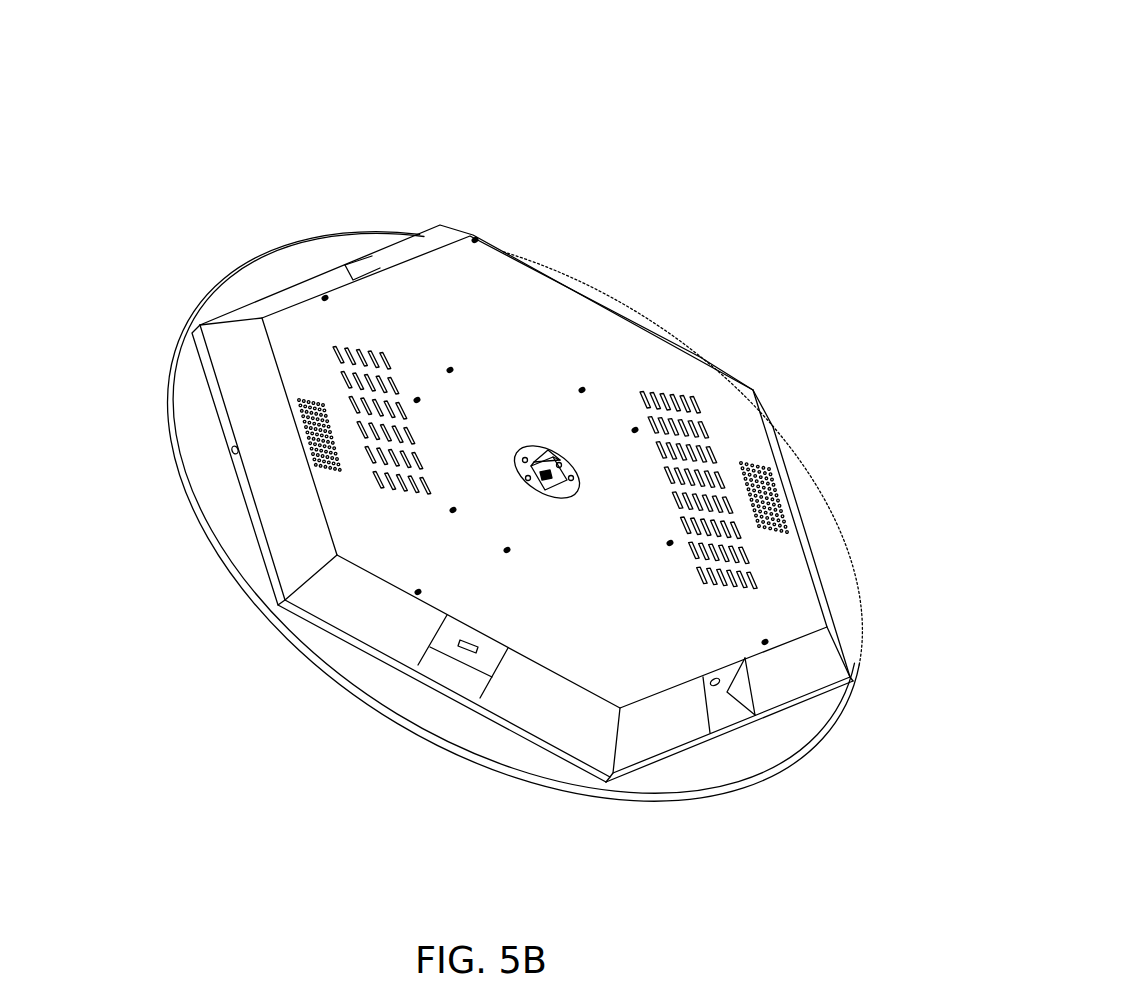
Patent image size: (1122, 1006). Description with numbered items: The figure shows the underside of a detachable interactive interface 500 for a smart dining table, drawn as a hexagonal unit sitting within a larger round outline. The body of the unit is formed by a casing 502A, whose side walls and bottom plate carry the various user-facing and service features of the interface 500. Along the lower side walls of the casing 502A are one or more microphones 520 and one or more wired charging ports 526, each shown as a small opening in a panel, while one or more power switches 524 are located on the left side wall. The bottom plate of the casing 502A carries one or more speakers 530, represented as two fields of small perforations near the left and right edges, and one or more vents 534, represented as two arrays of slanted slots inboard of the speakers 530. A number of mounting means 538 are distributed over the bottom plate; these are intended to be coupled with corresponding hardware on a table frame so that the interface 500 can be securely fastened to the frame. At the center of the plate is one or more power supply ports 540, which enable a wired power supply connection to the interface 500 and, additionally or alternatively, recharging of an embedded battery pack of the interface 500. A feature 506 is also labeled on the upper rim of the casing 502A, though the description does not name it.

The detachable interactive interface 500 is at (697, 60).
The casing 502A is at (637, 347).
The top rim notch 506 is at (312, 258).
The microphone 520 is at (720, 682).
The power switch 524 is at (230, 450).
The wired charging port 526 is at (463, 652).
The speaker 530 is at (300, 403).
The vent 534 is at (387, 533).
The mounting means 538 is at (582, 390).
The power supply port 540 is at (553, 505).